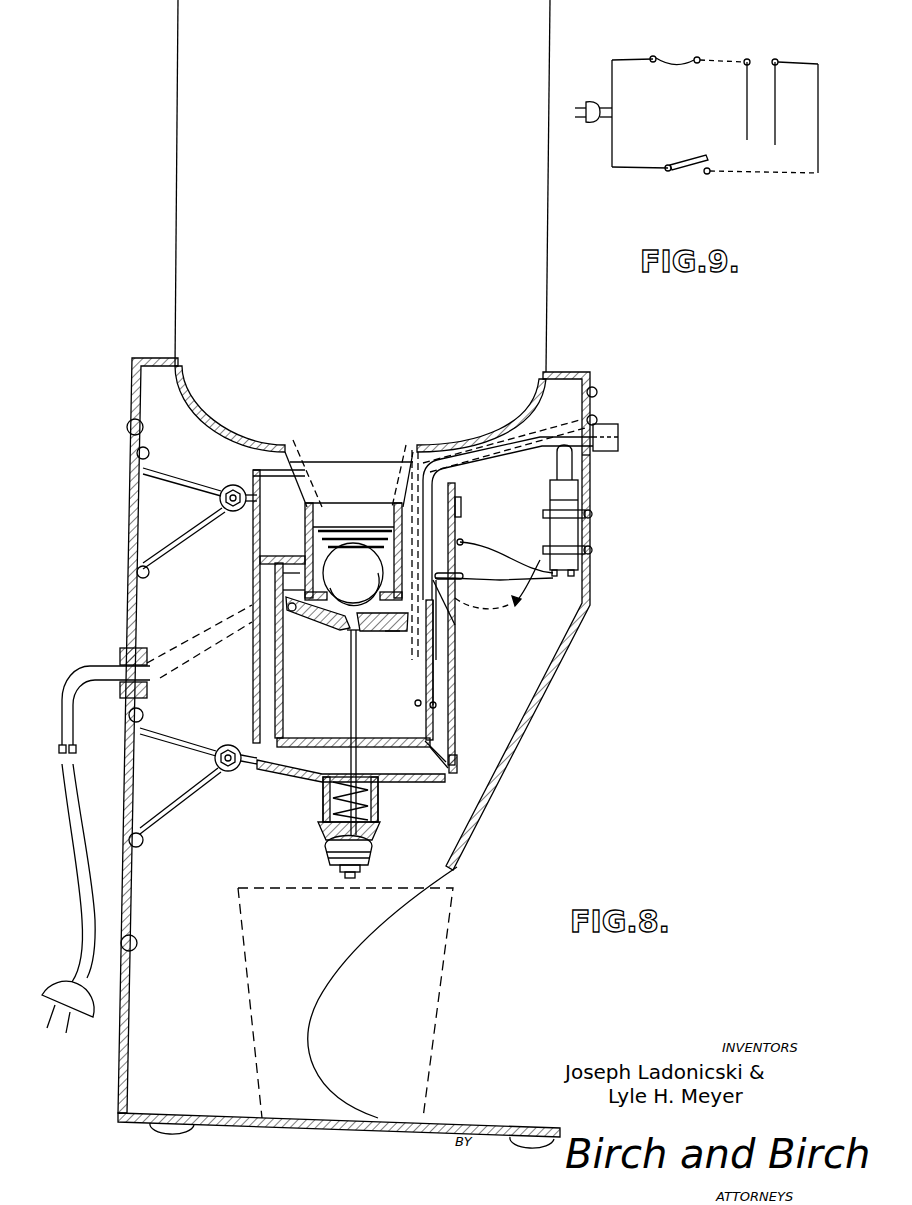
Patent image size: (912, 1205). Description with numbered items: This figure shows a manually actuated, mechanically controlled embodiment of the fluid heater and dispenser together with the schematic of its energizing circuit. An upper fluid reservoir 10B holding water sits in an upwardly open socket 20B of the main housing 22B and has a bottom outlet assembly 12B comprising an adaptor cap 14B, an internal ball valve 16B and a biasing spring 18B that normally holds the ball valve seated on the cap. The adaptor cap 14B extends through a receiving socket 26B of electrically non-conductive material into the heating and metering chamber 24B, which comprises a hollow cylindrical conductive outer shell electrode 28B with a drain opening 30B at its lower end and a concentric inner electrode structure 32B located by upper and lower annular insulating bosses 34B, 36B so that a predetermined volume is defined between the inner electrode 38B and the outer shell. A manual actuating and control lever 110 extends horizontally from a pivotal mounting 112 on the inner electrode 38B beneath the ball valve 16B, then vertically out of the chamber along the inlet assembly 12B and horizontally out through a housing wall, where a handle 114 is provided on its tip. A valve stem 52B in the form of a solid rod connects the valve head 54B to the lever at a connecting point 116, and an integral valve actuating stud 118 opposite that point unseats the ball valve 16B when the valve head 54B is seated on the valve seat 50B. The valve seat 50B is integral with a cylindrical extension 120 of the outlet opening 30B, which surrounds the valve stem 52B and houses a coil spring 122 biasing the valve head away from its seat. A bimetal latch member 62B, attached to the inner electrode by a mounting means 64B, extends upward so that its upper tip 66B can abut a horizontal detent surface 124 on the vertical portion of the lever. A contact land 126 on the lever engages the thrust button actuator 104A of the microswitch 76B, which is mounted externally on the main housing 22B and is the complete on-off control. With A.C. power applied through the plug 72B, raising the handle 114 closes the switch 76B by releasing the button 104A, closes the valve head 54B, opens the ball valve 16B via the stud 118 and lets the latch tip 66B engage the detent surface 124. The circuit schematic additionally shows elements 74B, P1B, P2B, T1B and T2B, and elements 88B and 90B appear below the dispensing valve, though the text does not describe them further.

In FIG. 8, the fluid reservoir 10B is at (386, 232).
In FIG. 8, the bottom outlet assembly 12B is at (296, 574).
In FIG. 8, the adaptor cap 14B is at (305, 590).
In FIG. 8, the ball valve 16B is at (353, 574).
In FIG. 8, the biasing spring 18B is at (357, 530).
In FIG. 8, the socket 20B is at (566, 373).
In FIG. 8, the main housing 22B is at (212, 1017).
In FIG. 8, the heating and metering chamber 24B is at (338, 719).
In FIG. 8, the receiving socket 26B is at (440, 527).
In FIG. 8, the outer shell electrode 28B is at (253, 672).
In FIG. 9, the outer shell electrode 28B is at (747, 115).
In FIG. 8, the drain opening 30B is at (342, 770).
In FIG. 8, the inner electrode structure 32B is at (270, 605).
In FIG. 8, the upper annular insulating boss 34B is at (268, 560).
In FIG. 8, the lower annular insulating boss 36B is at (265, 771).
In FIG. 8, the inner electrode 38B is at (284, 678).
In FIG. 9, the inner electrode 38B is at (775, 120).
In FIG. 8, the valve seat 50B is at (382, 820).
In FIG. 8, the valve stem 52B is at (357, 712).
In FIG. 8, the valve head 54B is at (370, 856).
In FIG. 8, the bimetal latch member 62B is at (432, 680).
In FIG. 8, the mounting means 64B is at (436, 705).
In FIG. 8, the upper tip 66B is at (440, 615).
In FIG. 8, the plug 72B is at (62, 990).
In FIG. 9, the plug 72B is at (590, 124).
In FIG. 9, the switch 74B is at (677, 66).
In FIG. 8, the microswitch 76B is at (580, 536).
In FIG. 9, the microswitch 76B is at (690, 158).
In FIG. 8, the drip shield 88B is at (335, 963).
In FIG. 8, the cup 90B is at (399, 1029).
In FIG. 8, the thrust button actuator 104A is at (572, 465).
In FIG. 8, the manual actuating and control lever 110 is at (393, 633).
In FIG. 8, the pivotal mounting 112 is at (293, 617).
In FIG. 8, the handle 114 is at (619, 441).
In FIG. 8, the connecting point 116 is at (347, 632).
In FIG. 8, the valve actuating stud 118 is at (382, 615).
In FIG. 8, the cylindrical extension 120 is at (379, 795).
In FIG. 8, the coil spring 122 is at (332, 800).
In FIG. 8, the detent surface 124 is at (443, 583).
In FIG. 8, the contact land 126 is at (590, 456).
In FIG. 8, the power line P1B is at (535, 565).
In FIG. 9, the power line P1B is at (625, 58).
In FIG. 8, the power line P2B is at (503, 578).
In FIG. 9, the power line P2B is at (755, 175).
In FIG. 8, the terminal T1B is at (463, 541).
In FIG. 9, the terminal T1B is at (747, 59).
In FIG. 8, the terminal T2B is at (455, 597).
In FIG. 9, the terminal T2B is at (775, 59).